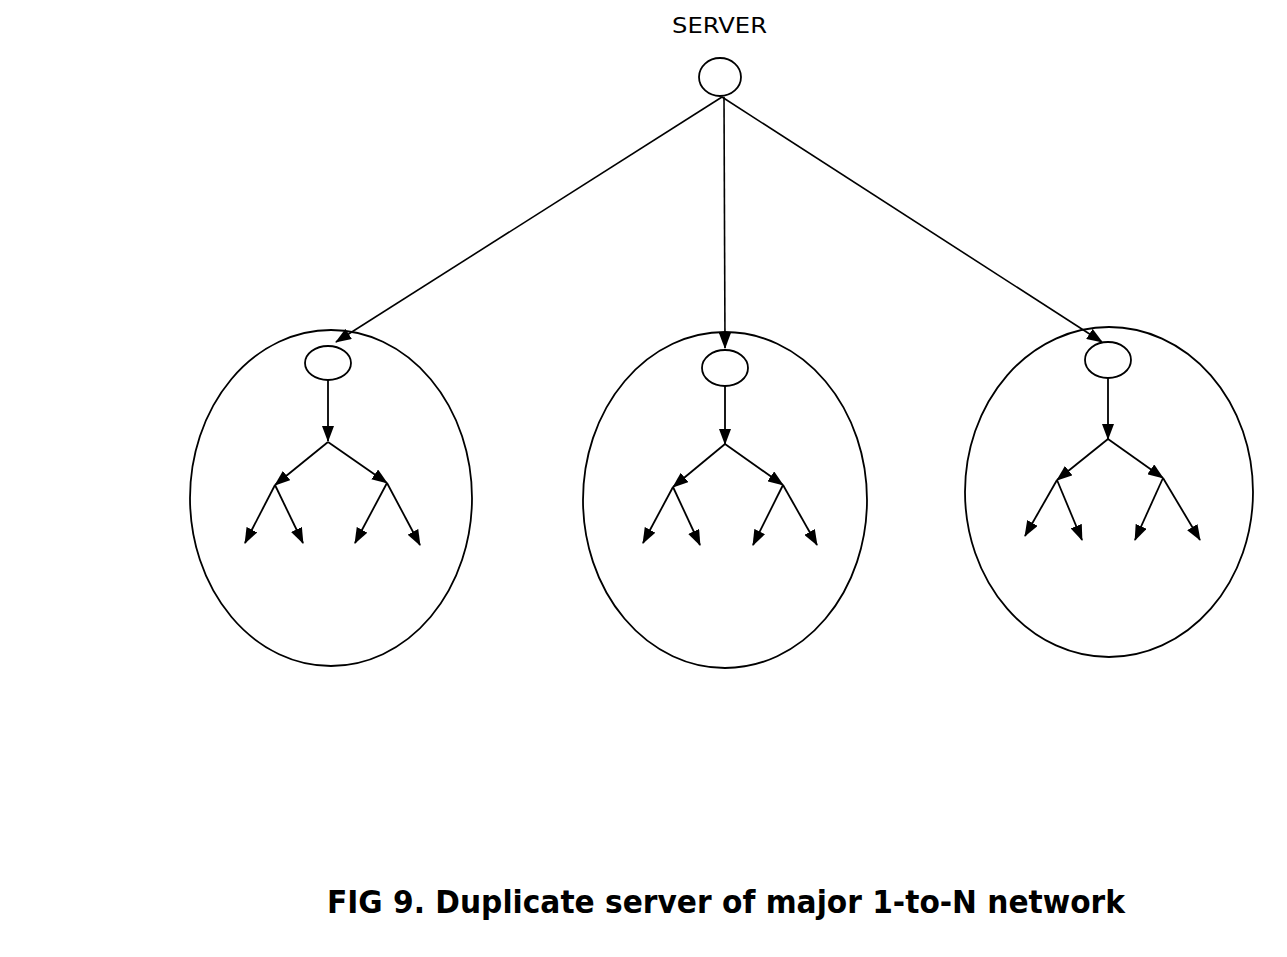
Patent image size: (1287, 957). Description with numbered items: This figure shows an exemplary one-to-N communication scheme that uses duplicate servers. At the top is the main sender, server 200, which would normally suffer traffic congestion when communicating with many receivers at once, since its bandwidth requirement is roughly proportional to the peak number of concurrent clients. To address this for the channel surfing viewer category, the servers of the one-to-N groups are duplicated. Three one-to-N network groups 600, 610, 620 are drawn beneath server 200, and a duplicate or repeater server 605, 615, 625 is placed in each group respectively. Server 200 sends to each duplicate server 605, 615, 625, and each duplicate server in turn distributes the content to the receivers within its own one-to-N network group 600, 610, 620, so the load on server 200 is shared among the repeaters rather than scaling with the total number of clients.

The server 200 is at (738, 80).
The 1-to-N network group 600 is at (346, 615).
The duplicate server 605 is at (318, 356).
The 1-to-N network group 610 is at (747, 615).
The duplicate server 615 is at (738, 360).
The 1-to-N network group 620 is at (1131, 615).
The duplicate server 625 is at (1120, 357).